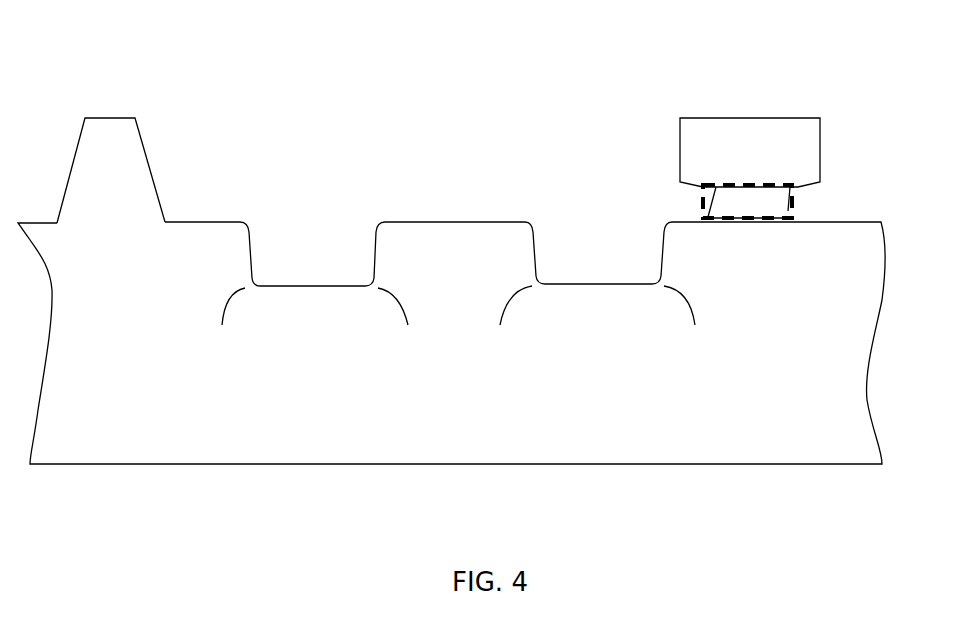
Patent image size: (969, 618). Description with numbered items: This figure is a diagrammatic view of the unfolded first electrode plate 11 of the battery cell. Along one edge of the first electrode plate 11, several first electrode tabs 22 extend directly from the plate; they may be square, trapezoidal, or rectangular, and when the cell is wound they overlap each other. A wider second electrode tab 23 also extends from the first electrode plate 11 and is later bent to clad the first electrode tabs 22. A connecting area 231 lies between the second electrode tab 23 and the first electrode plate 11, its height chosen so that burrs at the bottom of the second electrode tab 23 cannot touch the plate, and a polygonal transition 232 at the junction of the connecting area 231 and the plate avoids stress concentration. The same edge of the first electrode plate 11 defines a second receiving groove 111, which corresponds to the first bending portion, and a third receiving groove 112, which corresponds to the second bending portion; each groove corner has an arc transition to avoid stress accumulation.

The first electrode plate 11 is at (440, 250).
The first electrode tabs 22 is at (117, 190).
The second receiving groove 111 is at (338, 244).
The third receiving groove 112 is at (617, 234).
The second electrode tab 23 is at (760, 118).
The connecting area 231 is at (770, 210).
The polygonal transition 232 is at (750, 224).